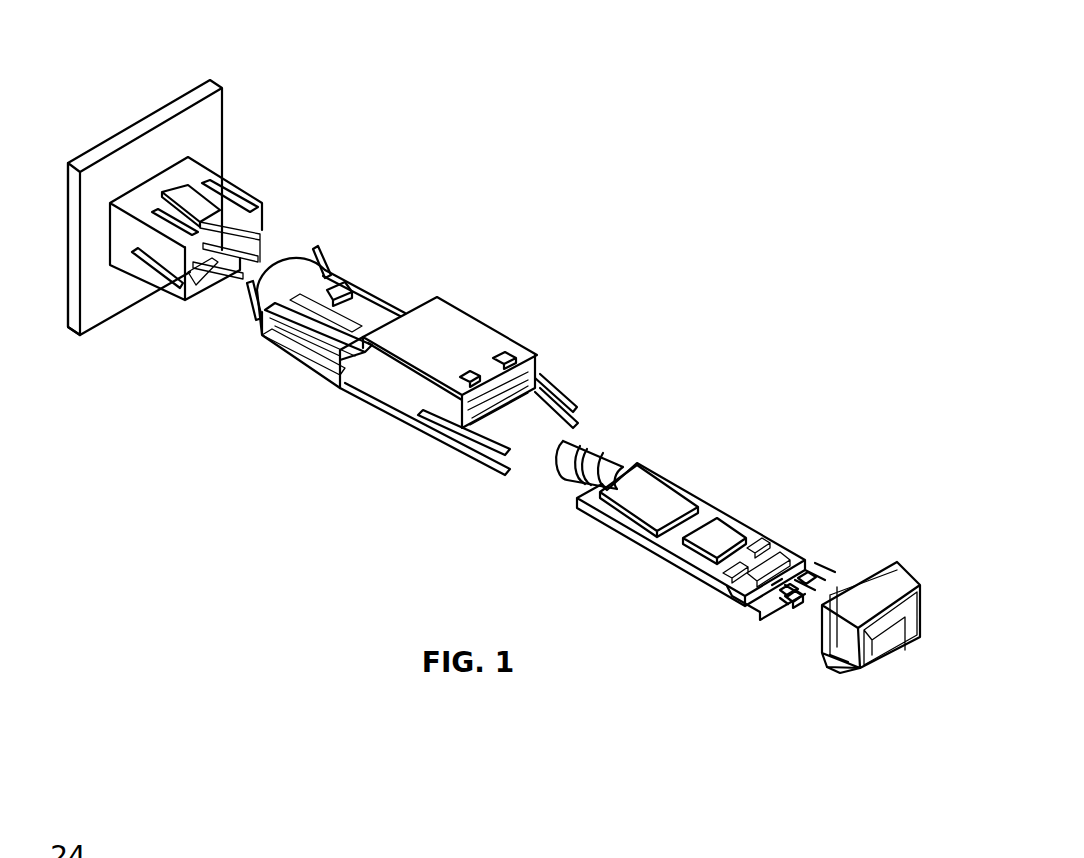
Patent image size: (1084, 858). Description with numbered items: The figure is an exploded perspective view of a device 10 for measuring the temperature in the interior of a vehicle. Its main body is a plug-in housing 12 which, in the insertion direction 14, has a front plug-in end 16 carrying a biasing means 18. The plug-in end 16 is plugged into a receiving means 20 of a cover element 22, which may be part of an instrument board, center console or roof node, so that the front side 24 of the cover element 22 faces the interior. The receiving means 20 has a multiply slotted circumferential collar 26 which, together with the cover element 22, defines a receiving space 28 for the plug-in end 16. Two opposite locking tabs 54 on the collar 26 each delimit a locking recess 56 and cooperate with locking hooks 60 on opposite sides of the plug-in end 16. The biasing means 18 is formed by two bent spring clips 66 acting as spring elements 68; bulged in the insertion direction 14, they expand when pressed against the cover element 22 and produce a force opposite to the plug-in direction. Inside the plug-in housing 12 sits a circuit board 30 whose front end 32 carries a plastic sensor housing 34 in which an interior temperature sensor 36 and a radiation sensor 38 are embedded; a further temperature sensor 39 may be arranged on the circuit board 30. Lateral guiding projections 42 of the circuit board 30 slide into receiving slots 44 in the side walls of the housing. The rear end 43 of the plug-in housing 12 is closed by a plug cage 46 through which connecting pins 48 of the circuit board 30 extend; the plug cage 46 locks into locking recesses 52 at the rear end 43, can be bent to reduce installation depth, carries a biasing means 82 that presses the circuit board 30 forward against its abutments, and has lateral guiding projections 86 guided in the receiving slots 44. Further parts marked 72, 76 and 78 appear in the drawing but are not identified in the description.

The device 10 is at (605, 257).
The plug-in housing 12 is at (475, 340).
The insertion direction 14 is at (393, 455).
The front plug-in end 16 is at (308, 238).
The biasing means 18 is at (428, 252).
The receiving means 20 is at (305, 131).
The cover element 22 is at (203, 127).
The front side 24 is at (63, 210).
The circumferential collar 26 is at (132, 237).
The receiving space 28 is at (187, 296).
The circuit board 30 is at (707, 510).
The front end 32 is at (673, 467).
The sensor housing 34 is at (587, 448).
The interior temperature sensor 36 is at (568, 432).
The radiation sensor 38 is at (580, 432).
The temperature sensor 39 is at (763, 533).
The lateral guiding projections 42 is at (830, 553).
The rear end 43 is at (592, 383).
The receiving slots 44 is at (497, 462).
The plug cage 46 is at (848, 642).
The connecting pins 48 is at (793, 603).
The locking recesses 52 is at (515, 358).
The locking tabs 54 is at (230, 204).
The locking recess 56 is at (197, 203).
The locking hooks 60 is at (345, 297).
The spring clips 66 is at (330, 253).
The spring elements 68 is at (387, 253).
The retention tab 72 is at (463, 373).
The contact member 76 is at (293, 350).
The guide slot 78 is at (310, 237).
The biasing means 82 is at (727, 622).
The lateral guiding projections 86 is at (862, 672).